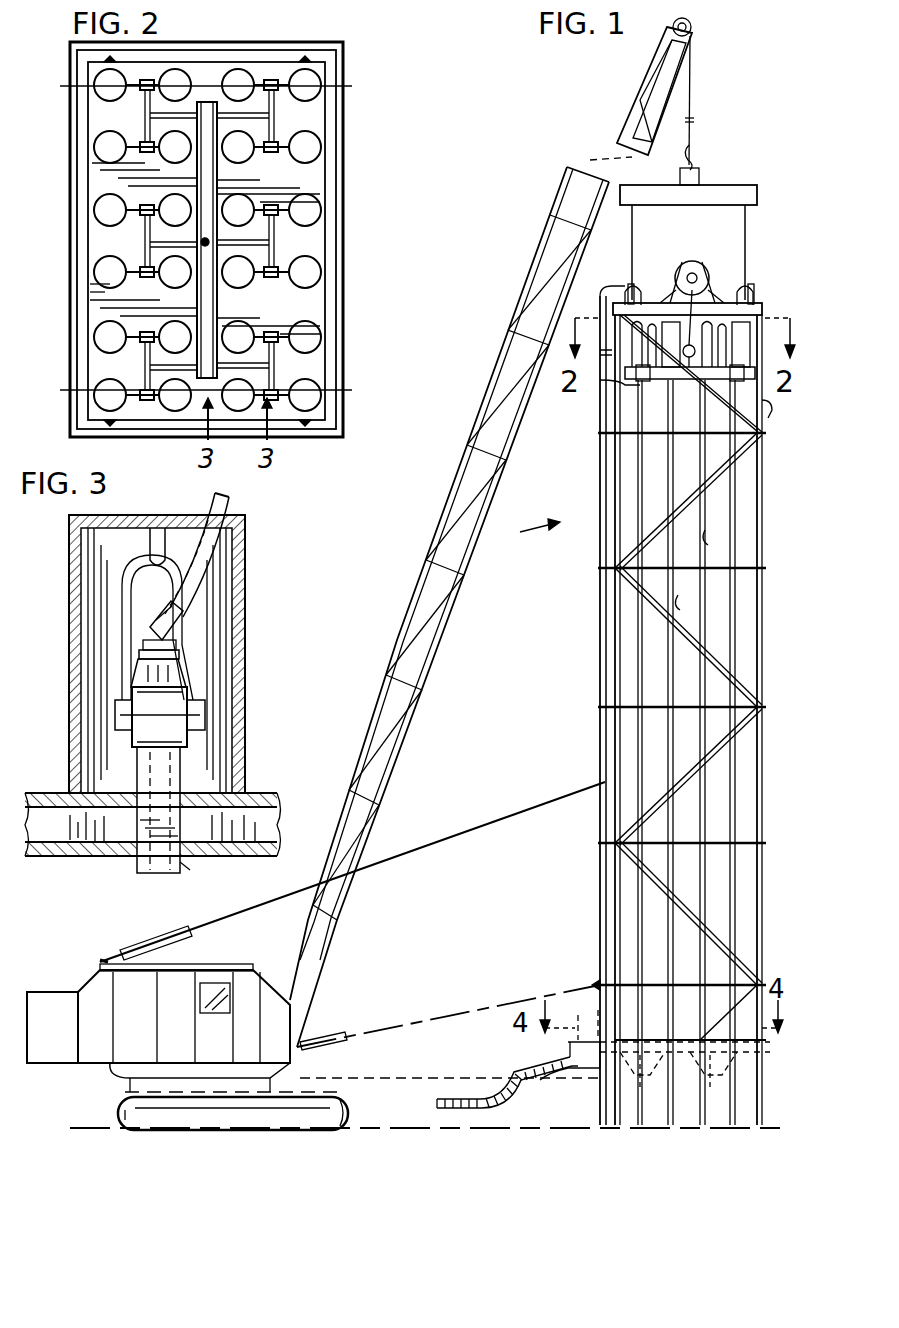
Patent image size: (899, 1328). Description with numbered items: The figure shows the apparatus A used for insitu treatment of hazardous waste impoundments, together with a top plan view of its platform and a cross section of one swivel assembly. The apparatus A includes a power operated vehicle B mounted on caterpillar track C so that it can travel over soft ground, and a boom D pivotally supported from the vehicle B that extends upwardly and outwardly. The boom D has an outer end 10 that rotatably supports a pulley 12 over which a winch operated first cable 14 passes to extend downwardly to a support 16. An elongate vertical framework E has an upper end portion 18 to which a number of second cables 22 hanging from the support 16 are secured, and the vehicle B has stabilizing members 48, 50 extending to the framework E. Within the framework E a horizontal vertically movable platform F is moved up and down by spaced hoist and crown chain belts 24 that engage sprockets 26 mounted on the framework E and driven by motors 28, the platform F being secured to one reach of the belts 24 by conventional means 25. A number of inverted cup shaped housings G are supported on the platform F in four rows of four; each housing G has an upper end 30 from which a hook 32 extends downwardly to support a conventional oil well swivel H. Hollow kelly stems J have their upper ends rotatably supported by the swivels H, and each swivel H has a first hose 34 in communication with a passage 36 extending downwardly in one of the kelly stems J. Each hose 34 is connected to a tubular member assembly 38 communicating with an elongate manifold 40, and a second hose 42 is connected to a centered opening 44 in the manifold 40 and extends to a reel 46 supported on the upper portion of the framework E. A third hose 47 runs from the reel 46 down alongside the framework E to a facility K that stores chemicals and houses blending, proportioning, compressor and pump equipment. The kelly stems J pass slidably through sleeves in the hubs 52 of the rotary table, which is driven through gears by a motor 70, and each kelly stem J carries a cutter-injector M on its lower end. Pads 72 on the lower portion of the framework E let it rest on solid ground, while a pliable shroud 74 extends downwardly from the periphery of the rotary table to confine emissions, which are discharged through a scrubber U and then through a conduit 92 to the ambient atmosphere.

In FIG. 1, the outer end 10 is at (640, 52).
In FIG. 1, the pulley 12 is at (691, 27).
In FIG. 1, the first cable 14 is at (692, 80).
In FIG. 1, the support 16 is at (757, 190).
In FIG. 1, the upper end portion 18 is at (762, 300).
In FIG. 1, the second cables 22 is at (632, 228).
In FIG. 1, the hoist and crown chain belts 24 is at (598, 297).
In FIG. 1, the conventional means 25 is at (600, 395).
In FIG. 1, the sprockets 26 is at (622, 283).
In FIG. 1, the motors 28 is at (702, 279).
In FIG. 3, the upper end 30 is at (157, 528).
In FIG. 3, the hook 32 is at (160, 572).
In FIG. 2, the first hose 34 is at (128, 98).
In FIG. 3, the first hose 34 is at (232, 500).
In FIG. 3, the passage 36 is at (155, 873).
In FIG. 2, the tubular member assembly 38 is at (146, 134).
In FIG. 2, the manifold 40 is at (218, 170).
In FIG. 1, the second hose 42 is at (697, 268).
In FIG. 2, the centered opening 44 is at (200, 242).
In FIG. 1, the reel 46 is at (686, 262).
In FIG. 1, the third hose 47 is at (600, 478).
In FIG. 1, the stabilizing member 48 is at (410, 858).
In FIG. 1, the stabilizing member 50 is at (440, 1012).
In FIG. 3, the hubs 52 is at (262, 793).
In FIG. 1, the motor 70 is at (592, 985).
In FIG. 1, the pads 72 is at (600, 1108).
In FIG. 1, the shroud 74 is at (681, 752).
In FIG. 1, the conduit 92 is at (495, 1104).
In FIG. 1, the apparatus A is at (530, 530).
In FIG. 1, the power operated vehicle B is at (184, 1019).
In FIG. 1, the caterpillar track C is at (350, 1110).
In FIG. 1, the boom D is at (420, 690).
In FIG. 1, the framework E is at (773, 410).
In FIG. 1, the platform F is at (599, 352).
In FIG. 2, the housings G is at (205, 238).
In FIG. 3, the swivel H is at (188, 748).
In FIG. 3, the kelly stems J is at (192, 870).
In FIG. 1, the kelly stems J is at (696, 565).
In FIG. 1, the facility K is at (52, 1027).
In FIG. 1, the cutter-injector M is at (570, 1068).
In FIG. 1, the scrubber U is at (560, 1068).